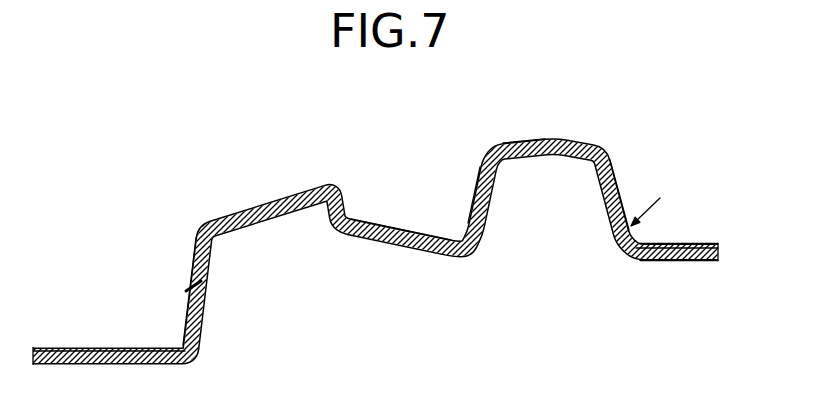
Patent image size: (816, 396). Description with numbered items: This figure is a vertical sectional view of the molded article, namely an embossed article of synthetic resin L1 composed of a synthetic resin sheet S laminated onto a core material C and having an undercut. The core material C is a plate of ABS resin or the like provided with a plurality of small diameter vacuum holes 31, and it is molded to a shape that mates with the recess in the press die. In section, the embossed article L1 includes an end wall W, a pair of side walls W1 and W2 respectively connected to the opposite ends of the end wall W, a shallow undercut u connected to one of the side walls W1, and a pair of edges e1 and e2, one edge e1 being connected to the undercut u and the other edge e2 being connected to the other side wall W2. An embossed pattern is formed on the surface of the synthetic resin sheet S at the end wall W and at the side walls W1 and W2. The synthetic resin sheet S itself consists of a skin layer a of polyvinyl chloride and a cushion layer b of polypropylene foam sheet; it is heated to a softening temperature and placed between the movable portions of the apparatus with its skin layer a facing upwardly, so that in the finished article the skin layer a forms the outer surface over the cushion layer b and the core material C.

The vacuum holes 31 is at (279, 214).
The edge e1 is at (100, 347).
The shallow undercut u is at (188, 326).
The side wall W1 is at (193, 256).
The end wall W is at (414, 233).
The core material C is at (479, 236).
The side wall W2 is at (622, 207).
The embossed article of synthetic resin L1 is at (656, 199).
The edge e2 is at (676, 246).
The skin layer a is at (718, 247).
The cushion layer b is at (717, 261).
The synthetic resin sheet S is at (748, 212).